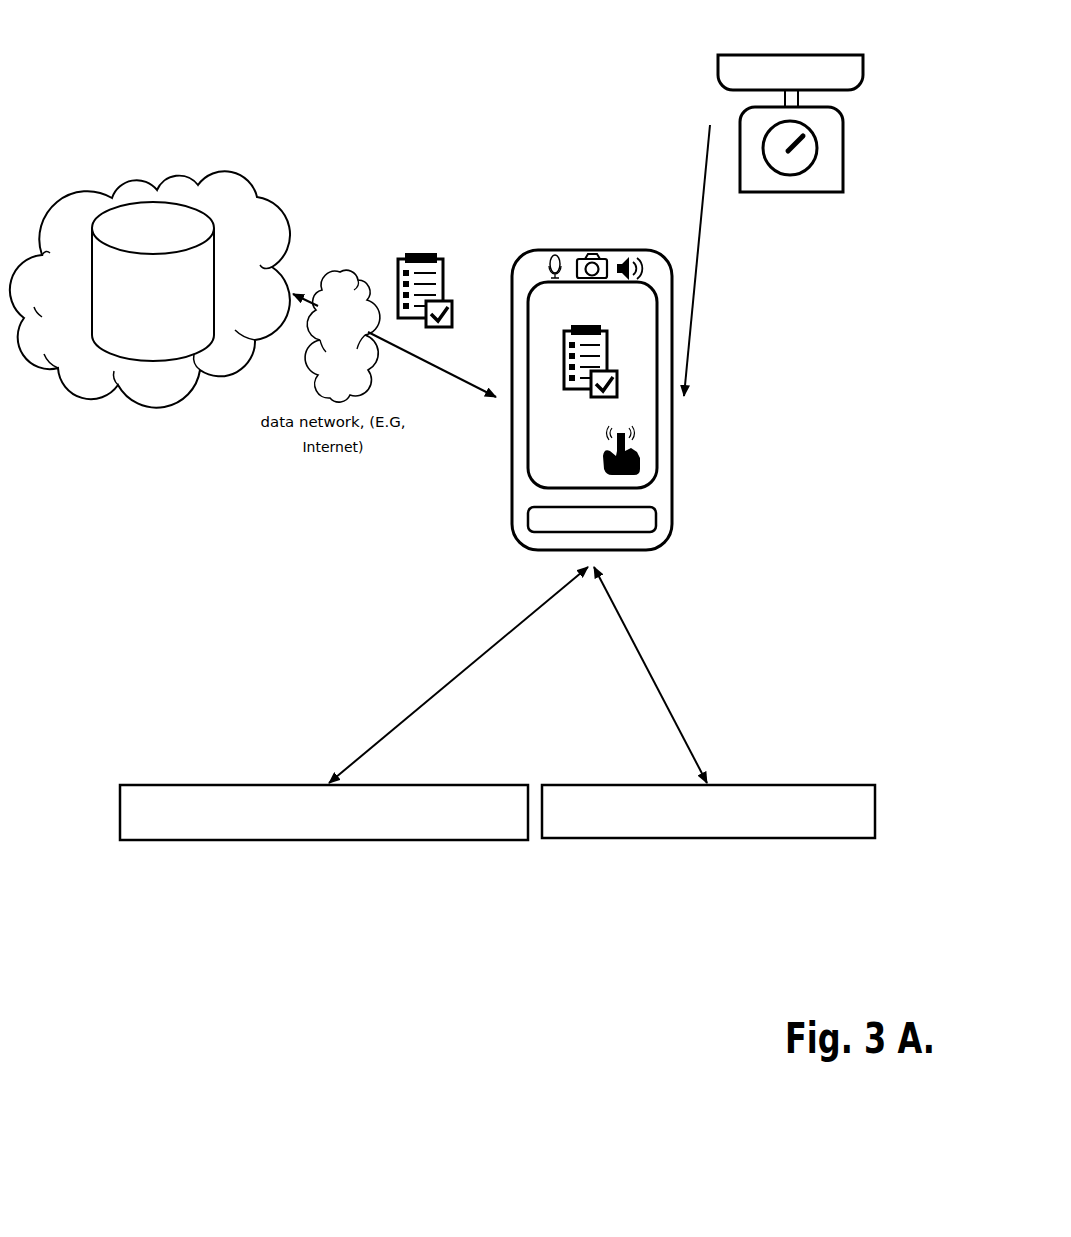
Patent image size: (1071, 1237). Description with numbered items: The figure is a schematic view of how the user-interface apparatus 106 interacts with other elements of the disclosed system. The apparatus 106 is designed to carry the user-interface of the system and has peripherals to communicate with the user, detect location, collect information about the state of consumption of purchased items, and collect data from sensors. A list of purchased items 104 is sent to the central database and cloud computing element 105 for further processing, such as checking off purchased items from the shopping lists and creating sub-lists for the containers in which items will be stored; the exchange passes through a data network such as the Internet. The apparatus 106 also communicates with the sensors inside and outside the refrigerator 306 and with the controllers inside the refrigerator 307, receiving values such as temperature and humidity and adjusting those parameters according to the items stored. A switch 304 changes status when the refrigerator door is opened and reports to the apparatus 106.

The central database and cloud computing element 105 is at (140, 215).
The list of purchased items 104 is at (424, 232).
The apparatus carrying the user-interface 106 is at (626, 233).
The switch 304 is at (755, 33).
The controllers inside the refrigerator 307 is at (288, 770).
The sensors inside and outside the refrigerator 306 is at (602, 777).